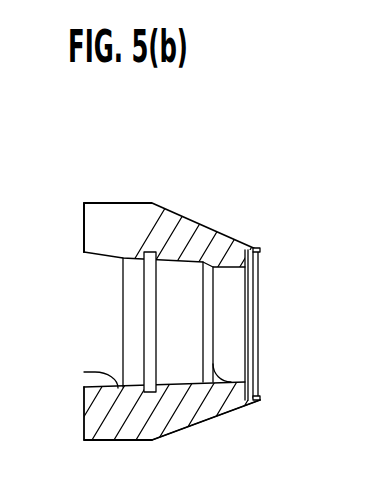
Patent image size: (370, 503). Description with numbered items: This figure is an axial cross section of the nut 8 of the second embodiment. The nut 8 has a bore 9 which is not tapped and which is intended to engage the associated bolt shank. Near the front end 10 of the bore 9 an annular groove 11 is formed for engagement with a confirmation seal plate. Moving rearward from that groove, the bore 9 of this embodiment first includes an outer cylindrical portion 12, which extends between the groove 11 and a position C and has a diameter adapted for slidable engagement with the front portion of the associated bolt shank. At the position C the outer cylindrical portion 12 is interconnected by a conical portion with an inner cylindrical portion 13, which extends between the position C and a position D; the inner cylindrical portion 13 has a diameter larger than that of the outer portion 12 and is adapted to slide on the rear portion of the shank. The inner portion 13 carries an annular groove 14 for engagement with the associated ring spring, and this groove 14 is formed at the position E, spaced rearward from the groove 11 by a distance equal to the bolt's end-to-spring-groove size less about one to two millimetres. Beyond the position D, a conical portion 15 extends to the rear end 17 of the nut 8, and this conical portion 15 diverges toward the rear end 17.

The nut 8 is at (139, 162).
The bore 9 is at (175, 298).
The front end 10 is at (262, 383).
The annular groove 11 is at (262, 253).
The outer cylindrical portion 12 is at (230, 330).
The inner cylindrical portion 13 is at (183, 385).
The annular groove 14 is at (158, 250).
The conical portion 15 is at (93, 372).
The rear end 17 is at (84, 227).
The position D is at (123, 350).
The position E is at (114, 438).
The position C is at (233, 393).